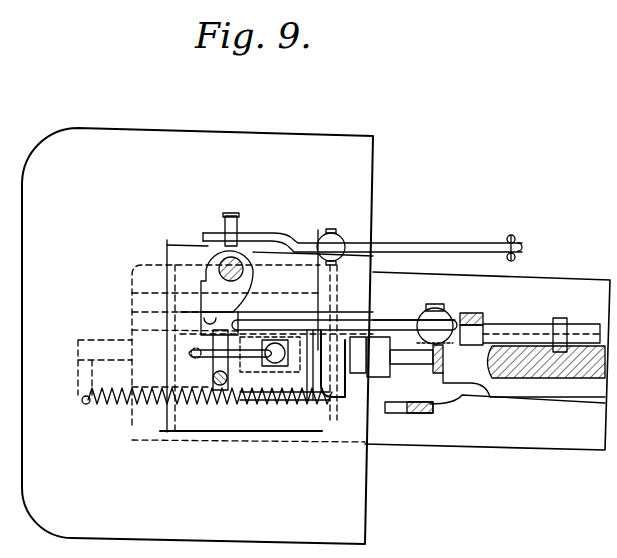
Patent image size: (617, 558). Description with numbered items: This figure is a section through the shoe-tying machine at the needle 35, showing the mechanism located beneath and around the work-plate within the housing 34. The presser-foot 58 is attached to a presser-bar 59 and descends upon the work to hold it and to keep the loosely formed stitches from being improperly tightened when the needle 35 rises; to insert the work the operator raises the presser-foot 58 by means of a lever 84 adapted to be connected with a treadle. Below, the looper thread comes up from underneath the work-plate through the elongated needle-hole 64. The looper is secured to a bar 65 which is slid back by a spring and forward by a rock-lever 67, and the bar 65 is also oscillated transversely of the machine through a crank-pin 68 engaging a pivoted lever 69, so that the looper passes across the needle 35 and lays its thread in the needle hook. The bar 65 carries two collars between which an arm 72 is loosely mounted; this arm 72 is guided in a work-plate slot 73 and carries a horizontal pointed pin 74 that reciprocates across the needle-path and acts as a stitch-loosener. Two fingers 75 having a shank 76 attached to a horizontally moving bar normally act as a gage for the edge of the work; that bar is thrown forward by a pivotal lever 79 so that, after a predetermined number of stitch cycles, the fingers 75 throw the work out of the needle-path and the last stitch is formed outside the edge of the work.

The housing 34 is at (191, 528).
The needle 35 is at (216, 378).
The presser-foot 58 is at (226, 326).
The presser-bar 59 is at (238, 262).
The needle-hole 64 is at (207, 378).
The bar 65 is at (334, 398).
The rock-lever 67 is at (412, 414).
The crank-pin 68 is at (416, 364).
The pivoted lever 69 is at (440, 372).
The arm 72 is at (274, 330).
The work-plate slot 73 is at (316, 430).
The pointed pin 74 is at (236, 368).
The fingers 75 is at (320, 322).
The shank 76 is at (397, 325).
The pivotal lever 79 is at (482, 318).
The lever 84 is at (418, 249).